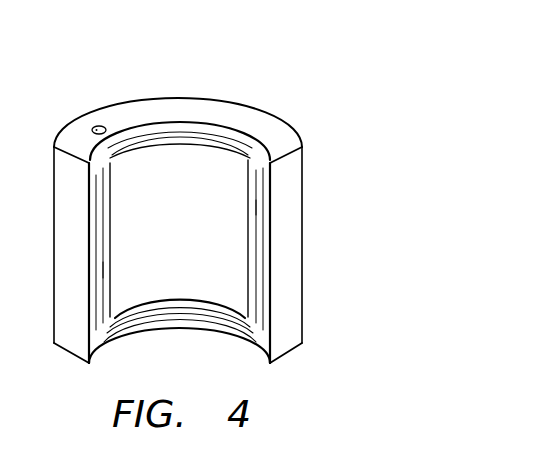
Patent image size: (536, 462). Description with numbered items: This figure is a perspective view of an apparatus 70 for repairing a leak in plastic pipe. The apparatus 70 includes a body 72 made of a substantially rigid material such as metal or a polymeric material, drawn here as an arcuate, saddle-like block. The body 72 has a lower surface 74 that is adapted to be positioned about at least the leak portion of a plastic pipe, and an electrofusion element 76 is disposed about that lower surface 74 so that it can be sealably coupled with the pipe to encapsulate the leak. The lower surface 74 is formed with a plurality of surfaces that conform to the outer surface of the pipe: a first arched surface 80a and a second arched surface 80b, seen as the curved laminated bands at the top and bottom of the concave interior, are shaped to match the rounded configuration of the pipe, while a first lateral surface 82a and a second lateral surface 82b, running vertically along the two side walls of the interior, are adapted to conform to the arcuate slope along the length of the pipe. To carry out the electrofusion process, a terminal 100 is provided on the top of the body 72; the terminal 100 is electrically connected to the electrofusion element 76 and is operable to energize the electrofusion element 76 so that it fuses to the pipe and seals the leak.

The apparatus 70 is at (214, 78).
The body 72 is at (268, 132).
The lower surface 74 is at (257, 208).
The electrofusion element 76 is at (103, 270).
The first arched surface 80a is at (172, 133).
The second arched surface 80b is at (180, 313).
The first lateral surface 82a is at (253, 260).
The second lateral surface 82b is at (103, 219).
The terminal 100 is at (98, 126).